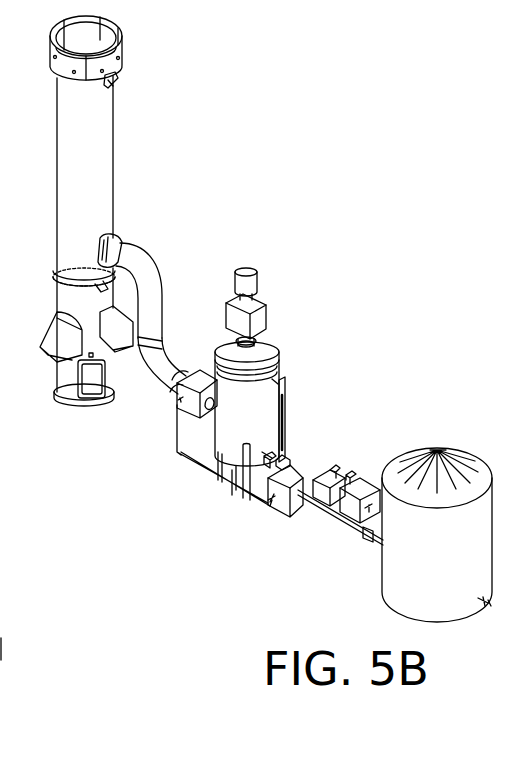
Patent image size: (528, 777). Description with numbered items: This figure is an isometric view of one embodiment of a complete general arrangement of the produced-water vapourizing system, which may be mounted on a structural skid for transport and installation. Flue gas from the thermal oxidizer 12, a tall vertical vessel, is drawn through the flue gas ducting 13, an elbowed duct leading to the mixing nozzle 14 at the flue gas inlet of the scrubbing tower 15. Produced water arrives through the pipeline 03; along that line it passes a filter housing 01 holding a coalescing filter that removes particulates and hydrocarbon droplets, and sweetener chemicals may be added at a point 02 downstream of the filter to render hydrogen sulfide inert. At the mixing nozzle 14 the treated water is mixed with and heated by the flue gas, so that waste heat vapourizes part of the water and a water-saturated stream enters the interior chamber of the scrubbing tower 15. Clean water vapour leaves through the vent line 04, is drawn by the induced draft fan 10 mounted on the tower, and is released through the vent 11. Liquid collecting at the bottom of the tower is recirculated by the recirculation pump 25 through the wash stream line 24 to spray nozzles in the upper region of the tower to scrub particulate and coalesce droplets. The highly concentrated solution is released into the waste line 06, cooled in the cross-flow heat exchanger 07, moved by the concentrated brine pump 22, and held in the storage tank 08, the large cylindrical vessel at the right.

The oxidizer 12 is at (100, 135).
The flue gas ducting 13 is at (145, 272).
The mixing nozzle 14 is at (178, 402).
The vent 11 is at (260, 272).
The induced draft fan 10 is at (268, 310).
The vent line 04 is at (260, 337).
The scrubbing tower 15 is at (232, 382).
The wash stream line 24 is at (283, 392).
The recirculation pump 25 is at (275, 462).
The pipeline 03 is at (190, 462).
The cross-flow heat exchanger 07 is at (285, 508).
The waste line 06 is at (318, 515).
The point 02 is at (351, 477).
The filter housing 01 is at (380, 490).
The concentrated brine pump 22 is at (368, 540).
The storage tank 08 is at (383, 572).